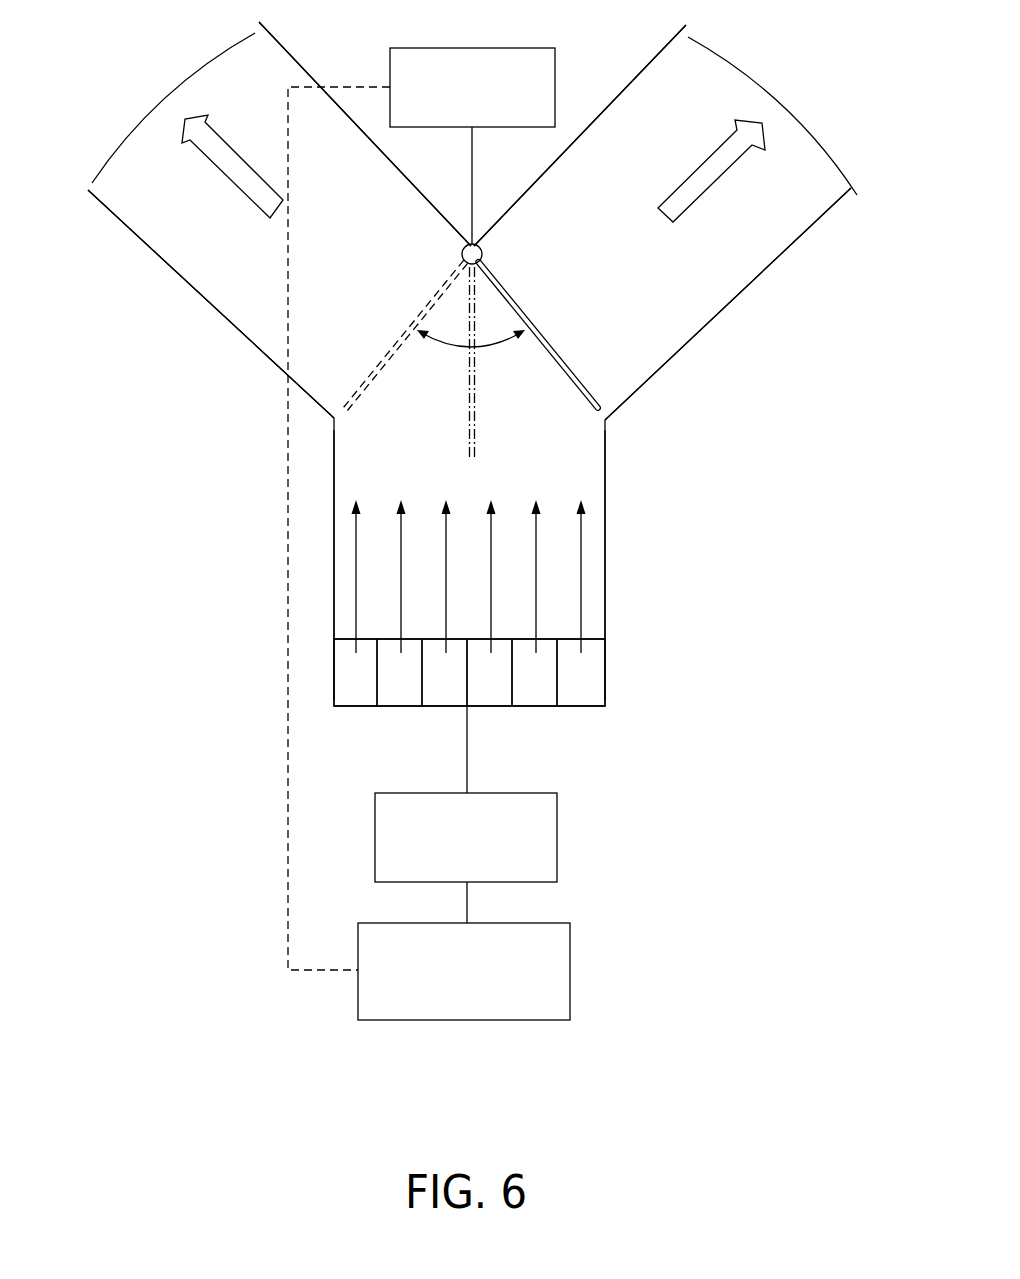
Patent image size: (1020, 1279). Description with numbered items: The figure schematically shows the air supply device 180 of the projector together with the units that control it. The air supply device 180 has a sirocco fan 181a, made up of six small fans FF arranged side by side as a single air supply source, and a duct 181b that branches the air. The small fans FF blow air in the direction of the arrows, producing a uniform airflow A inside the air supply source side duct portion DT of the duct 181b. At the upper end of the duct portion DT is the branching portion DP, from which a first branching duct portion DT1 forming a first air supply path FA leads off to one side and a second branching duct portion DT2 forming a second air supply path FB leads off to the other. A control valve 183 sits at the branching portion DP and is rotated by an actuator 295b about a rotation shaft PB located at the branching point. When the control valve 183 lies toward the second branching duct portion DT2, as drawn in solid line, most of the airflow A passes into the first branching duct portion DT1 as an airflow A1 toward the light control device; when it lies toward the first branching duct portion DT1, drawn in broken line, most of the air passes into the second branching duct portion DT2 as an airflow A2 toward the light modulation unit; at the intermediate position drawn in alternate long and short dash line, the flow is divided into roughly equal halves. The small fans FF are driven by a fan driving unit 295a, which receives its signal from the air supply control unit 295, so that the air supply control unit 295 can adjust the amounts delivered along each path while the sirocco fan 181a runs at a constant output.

The air supply device 180 is at (792, 702).
The sirocco fan 181a is at (642, 727).
The duct 181b is at (763, 373).
The control valve 183 is at (375, 357).
The air supply control unit 295 is at (570, 940).
The fan driving unit 295a is at (557, 835).
The actuator 295b is at (540, 68).
The branching portion DP is at (508, 186).
The rotation shaft PB is at (483, 252).
The air supply source side duct portion DT is at (605, 528).
The first branching duct portion DT1 is at (200, 288).
The second branching duct portion DT2 is at (742, 288).
The first air supply path FA is at (257, 303).
The second air supply path FB is at (647, 335).
The small fans FF is at (358, 698).
The airflow A is at (340, 551).
The airflow A1 is at (244, 190).
The airflow A2 is at (692, 198).